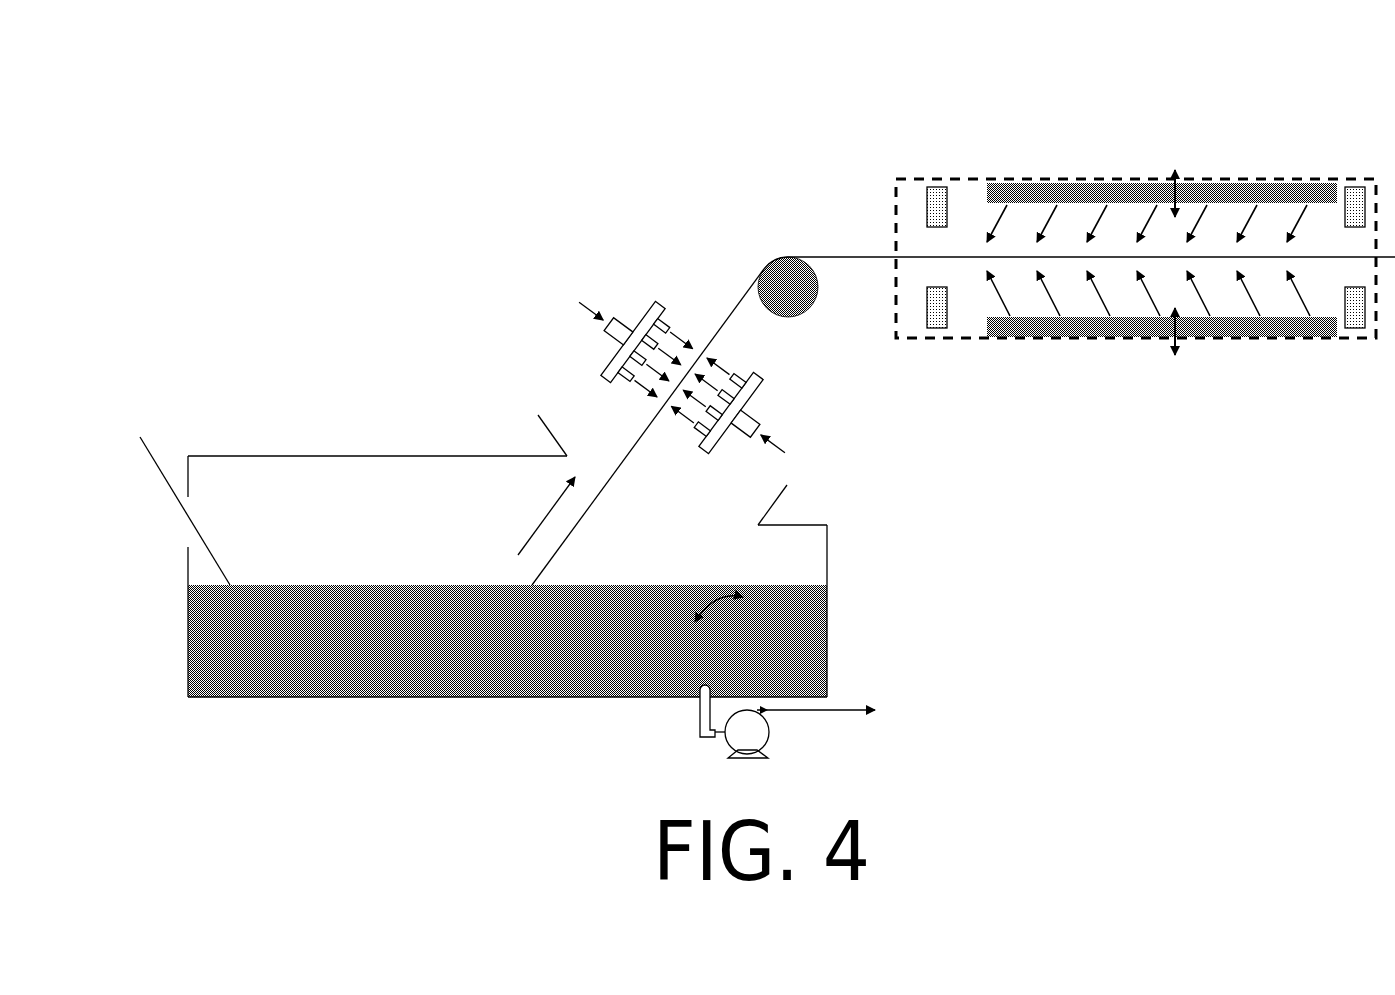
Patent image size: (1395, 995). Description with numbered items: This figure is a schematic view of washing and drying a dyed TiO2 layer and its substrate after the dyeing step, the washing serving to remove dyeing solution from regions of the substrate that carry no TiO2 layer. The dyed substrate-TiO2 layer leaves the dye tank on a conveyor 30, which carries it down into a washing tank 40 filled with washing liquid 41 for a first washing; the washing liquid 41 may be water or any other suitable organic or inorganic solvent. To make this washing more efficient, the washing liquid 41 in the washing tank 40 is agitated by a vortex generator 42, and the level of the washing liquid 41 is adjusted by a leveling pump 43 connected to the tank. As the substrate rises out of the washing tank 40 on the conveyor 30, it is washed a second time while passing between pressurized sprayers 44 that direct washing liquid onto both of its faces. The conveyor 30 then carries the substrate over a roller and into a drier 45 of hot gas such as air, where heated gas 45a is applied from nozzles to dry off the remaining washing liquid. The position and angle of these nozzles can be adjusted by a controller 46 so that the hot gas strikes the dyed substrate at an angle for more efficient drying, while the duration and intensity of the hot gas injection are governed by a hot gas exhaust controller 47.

The conveyor 30 is at (835, 257).
The washing tank 40 is at (507, 697).
The washing liquid 41 is at (230, 657).
The vortex generator 42 is at (778, 657).
The leveling pump 43 is at (757, 735).
The pressurized sprayers 44 is at (707, 443).
The drier 45 is at (893, 183).
The heated gas 45a is at (1297, 295).
The controller 46 is at (1072, 335).
The hot gas exhaust controller 47 is at (1355, 197).